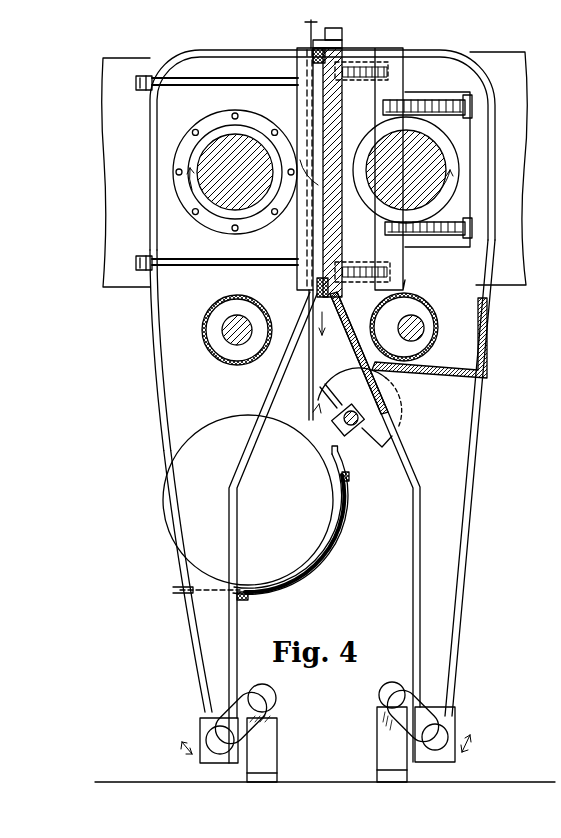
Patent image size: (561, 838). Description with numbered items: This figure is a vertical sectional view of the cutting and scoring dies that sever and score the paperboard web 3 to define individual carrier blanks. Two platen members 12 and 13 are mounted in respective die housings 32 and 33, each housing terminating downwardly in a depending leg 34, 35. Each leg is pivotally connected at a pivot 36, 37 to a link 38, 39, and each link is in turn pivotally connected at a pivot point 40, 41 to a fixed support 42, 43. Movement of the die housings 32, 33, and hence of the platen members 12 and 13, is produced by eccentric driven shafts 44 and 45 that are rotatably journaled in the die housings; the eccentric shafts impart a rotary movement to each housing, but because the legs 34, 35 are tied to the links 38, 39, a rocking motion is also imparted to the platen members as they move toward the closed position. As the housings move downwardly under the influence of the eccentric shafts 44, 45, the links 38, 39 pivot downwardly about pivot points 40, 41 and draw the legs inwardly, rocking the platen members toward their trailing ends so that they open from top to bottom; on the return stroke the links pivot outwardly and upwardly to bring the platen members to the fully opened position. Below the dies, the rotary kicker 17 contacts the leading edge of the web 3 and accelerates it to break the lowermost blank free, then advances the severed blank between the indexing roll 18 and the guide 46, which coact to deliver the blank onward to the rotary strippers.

The paperboard web 3 is at (318, 23).
The platen member 12 is at (342, 100).
The platen member 13 is at (297, 97).
The kicker 17 is at (397, 415).
The indexing roll 18 is at (285, 513).
The die housing 32 is at (490, 352).
The die housing 33 is at (155, 340).
The depending leg 34 is at (465, 612).
The depending leg 35 is at (188, 620).
The pivotal connection 36 is at (440, 736).
The pivotal connection 37 is at (220, 748).
The link 38 is at (415, 710).
The link 39 is at (258, 720).
The pivot point 40 is at (388, 682).
The pivot point 41 is at (264, 695).
The fixed support 42 is at (382, 740).
The fixed support 43 is at (273, 752).
The eccentric driven shaft 44 is at (376, 190).
The eccentric driven shaft 45 is at (227, 207).
The guide 46 is at (330, 551).